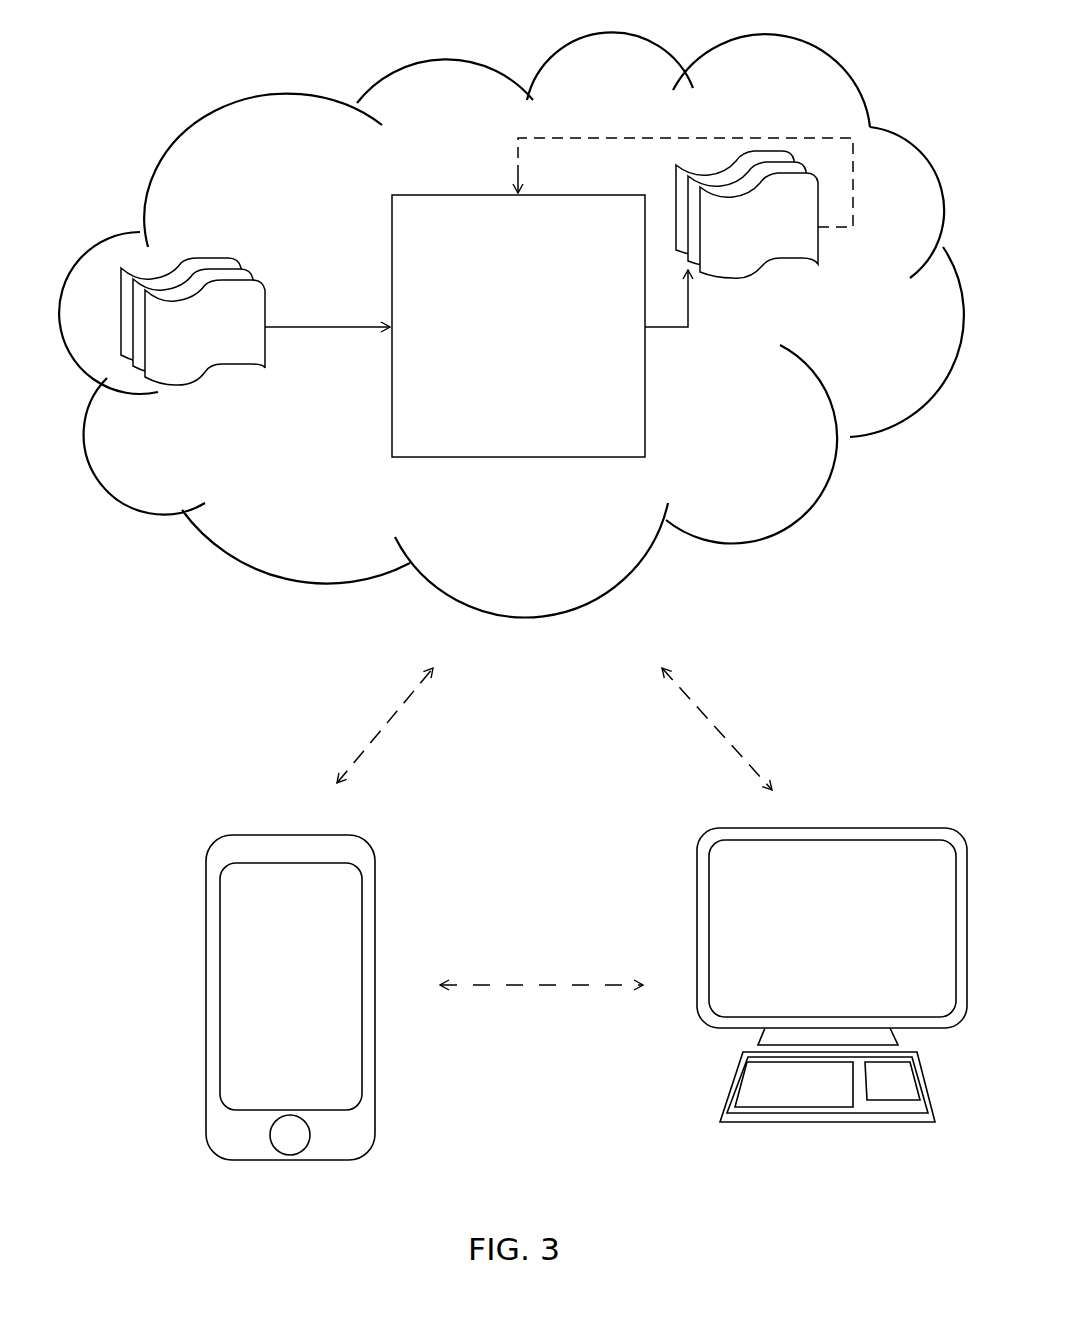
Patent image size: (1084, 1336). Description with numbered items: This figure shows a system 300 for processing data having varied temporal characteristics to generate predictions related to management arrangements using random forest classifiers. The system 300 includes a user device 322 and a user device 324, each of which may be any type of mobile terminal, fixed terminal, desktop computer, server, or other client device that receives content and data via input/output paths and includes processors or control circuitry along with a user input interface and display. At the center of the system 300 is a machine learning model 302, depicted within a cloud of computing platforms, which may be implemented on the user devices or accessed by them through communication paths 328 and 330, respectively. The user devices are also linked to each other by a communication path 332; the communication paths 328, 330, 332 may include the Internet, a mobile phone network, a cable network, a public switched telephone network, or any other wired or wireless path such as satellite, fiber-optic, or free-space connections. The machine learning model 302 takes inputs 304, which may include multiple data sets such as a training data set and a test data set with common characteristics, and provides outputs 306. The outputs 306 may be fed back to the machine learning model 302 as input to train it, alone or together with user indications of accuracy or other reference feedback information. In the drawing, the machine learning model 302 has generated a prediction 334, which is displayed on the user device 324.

The system 300 is at (511, 313).
The machine learning model 302 is at (518, 326).
The inputs 304 is at (210, 257).
The outputs 306 is at (793, 262).
The user device 322 is at (280, 813).
The user device 324 is at (827, 820).
The communication path 328 is at (355, 698).
The communication path 330 is at (732, 675).
The communication path 332 is at (530, 953).
The prediction 334 is at (860, 868).